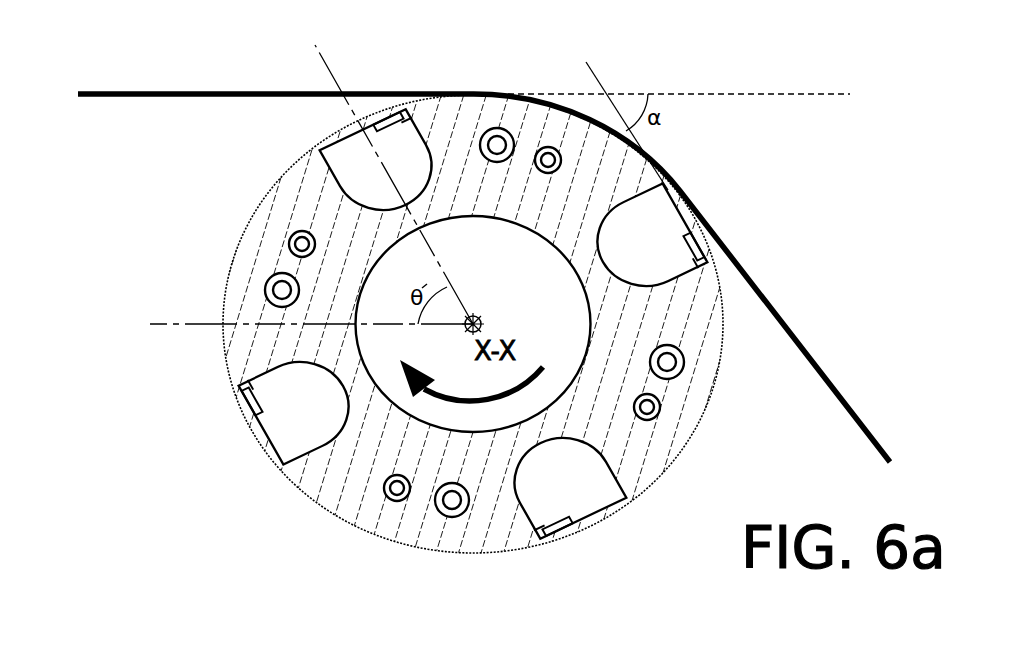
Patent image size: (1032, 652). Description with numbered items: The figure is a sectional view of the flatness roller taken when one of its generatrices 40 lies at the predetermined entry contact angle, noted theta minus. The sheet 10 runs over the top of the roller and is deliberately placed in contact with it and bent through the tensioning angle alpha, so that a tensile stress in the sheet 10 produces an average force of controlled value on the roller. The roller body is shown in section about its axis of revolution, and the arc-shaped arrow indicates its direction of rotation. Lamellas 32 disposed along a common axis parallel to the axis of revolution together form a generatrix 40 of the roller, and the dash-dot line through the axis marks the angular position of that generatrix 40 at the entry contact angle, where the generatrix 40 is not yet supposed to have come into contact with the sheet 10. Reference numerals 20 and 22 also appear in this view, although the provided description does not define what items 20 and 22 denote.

The sheet 10 is at (111, 92).
The cutting assembly 20 is at (447, 297).
The blade 22 is at (381, 113).
The lamella 32 is at (342, 134).
The generatrix 40 is at (328, 117).